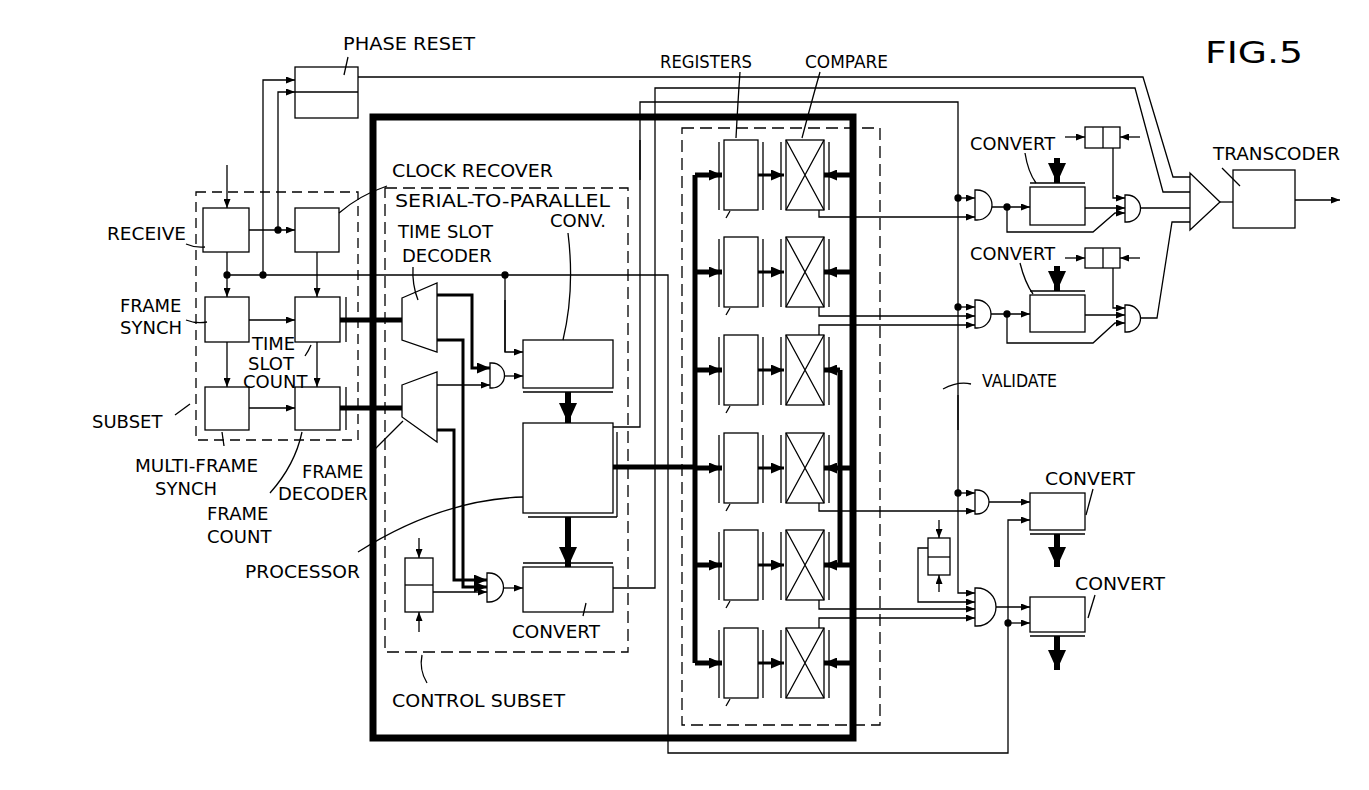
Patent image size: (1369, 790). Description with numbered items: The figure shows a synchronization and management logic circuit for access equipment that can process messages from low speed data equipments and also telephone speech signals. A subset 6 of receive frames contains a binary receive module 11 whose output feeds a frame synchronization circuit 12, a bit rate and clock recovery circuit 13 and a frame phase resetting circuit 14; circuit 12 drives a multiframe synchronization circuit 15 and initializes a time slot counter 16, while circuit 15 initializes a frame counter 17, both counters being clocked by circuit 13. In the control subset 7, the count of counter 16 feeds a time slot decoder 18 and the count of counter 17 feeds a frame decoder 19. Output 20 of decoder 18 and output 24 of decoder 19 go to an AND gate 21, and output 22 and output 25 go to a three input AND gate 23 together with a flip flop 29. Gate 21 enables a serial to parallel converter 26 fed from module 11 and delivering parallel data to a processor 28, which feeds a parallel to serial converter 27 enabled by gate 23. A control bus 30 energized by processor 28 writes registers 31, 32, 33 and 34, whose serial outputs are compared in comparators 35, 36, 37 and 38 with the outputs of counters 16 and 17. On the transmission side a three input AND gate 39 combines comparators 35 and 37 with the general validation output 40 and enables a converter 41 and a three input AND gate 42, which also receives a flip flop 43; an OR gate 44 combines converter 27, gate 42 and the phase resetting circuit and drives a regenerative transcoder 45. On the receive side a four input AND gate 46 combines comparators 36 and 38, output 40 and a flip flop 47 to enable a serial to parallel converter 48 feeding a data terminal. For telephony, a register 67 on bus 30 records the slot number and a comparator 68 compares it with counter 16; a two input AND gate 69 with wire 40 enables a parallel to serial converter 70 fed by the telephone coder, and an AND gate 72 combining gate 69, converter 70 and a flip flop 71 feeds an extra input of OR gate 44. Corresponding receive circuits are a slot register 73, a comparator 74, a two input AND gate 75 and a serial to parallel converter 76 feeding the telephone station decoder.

The subset of receive frames 6 is at (284, 446).
The control subset 7 is at (528, 655).
The binary receive module HDB3 11 is at (249, 231).
The frame synchronization circuit 12 is at (250, 342).
The bit rate and clock recovery circuit 13 is at (317, 252).
The frame phase resetting circuit 14 is at (320, 66).
The multiframe synchronization circuit 15 is at (250, 408).
The time slot counter 16 is at (348, 342).
The frame counter 17 is at (348, 408).
The time slot decoder 18 is at (417, 341).
The frame decoder 19 is at (417, 431).
The output of time slot decoder 20 is at (452, 292).
The AND gate 21 is at (492, 360).
The output of time slot decoder 22 is at (462, 423).
The three input AND gate 23 is at (495, 574).
The output of frame decoder 24 is at (473, 385).
The output of frame decoder 25 is at (452, 473).
The serial to parallel converter 26 is at (568, 381).
The parallel to serial converter 27 is at (856, 350).
The processor 28 is at (749, 347).
The flip flop 29 is at (432, 616).
The control bus 30 is at (699, 183).
The register 31 is at (739, 276).
The register 32 is at (739, 374).
The register 33 is at (739, 569).
The register 34 is at (739, 667).
The comparator 35 is at (792, 309).
The comparator 36 is at (792, 602).
The comparator 37 is at (792, 407).
The comparator 38 is at (792, 700).
The three input AND gate 39 is at (987, 300).
The general validation output 40 is at (637, 159).
The serial to parallel converter 41 is at (1077, 299).
The three input AND gate 42 is at (1140, 334).
The flip flop 43 is at (1120, 266).
The three input OR gate 44 is at (1205, 224).
The regenerative transcoder HDB3 45 is at (1286, 199).
The four input AND gate 46 is at (985, 627).
The flip flop 47 is at (927, 540).
The serial to parallel converter 48 is at (1057, 633).
The register 67 is at (739, 179).
The comparator 68 is at (792, 212).
The two input AND gate 69 is at (987, 190).
The parallel to serial converter 70 is at (1077, 191).
The flip flop 71 is at (1098, 127).
The AND gate 72 is at (1133, 195).
The slot No. register 73 is at (739, 472).
The comparator 74 is at (792, 505).
The two input AND gate 75 is at (987, 490).
The serial to parallel converter 76 is at (1057, 530).